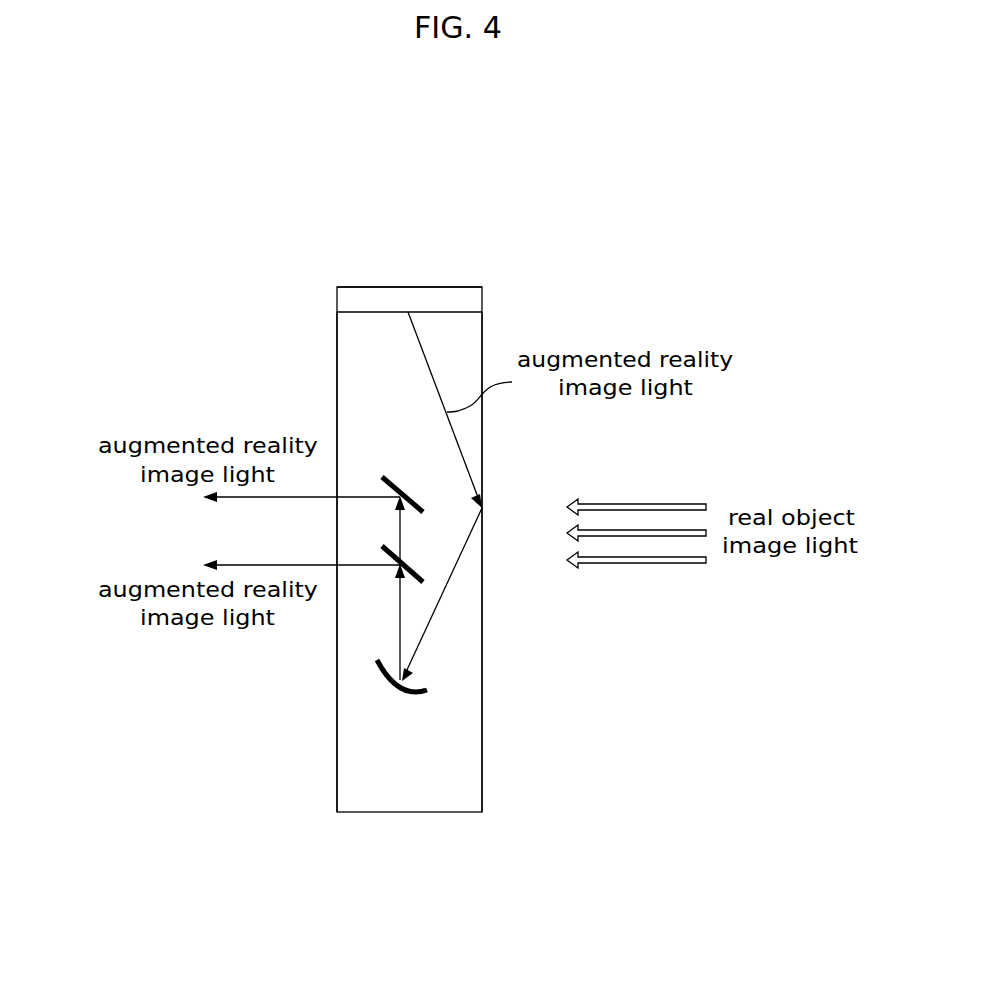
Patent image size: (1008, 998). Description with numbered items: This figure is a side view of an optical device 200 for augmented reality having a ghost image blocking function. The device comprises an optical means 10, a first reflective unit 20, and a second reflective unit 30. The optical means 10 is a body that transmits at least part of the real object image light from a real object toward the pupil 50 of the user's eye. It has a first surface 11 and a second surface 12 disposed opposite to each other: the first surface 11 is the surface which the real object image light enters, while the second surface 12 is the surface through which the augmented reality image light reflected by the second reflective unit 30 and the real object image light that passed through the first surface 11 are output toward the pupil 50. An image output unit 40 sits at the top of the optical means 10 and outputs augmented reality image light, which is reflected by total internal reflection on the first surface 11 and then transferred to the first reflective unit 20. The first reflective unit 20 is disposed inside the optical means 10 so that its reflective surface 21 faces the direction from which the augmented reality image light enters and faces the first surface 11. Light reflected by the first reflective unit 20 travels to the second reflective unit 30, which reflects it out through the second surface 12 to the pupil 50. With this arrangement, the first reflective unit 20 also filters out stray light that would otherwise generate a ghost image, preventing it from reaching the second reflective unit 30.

The optical device for augmented reality 200 is at (500, 218).
The optical means 10 is at (436, 813).
The first surface 11 is at (483, 765).
The second surface 12 is at (337, 365).
The image output unit 40 is at (337, 289).
The second reflective unit 30 is at (385, 481).
The first reflective unit 20 is at (395, 683).
The reflective surface 21 is at (410, 683).
The pupil 50 is at (110, 532).